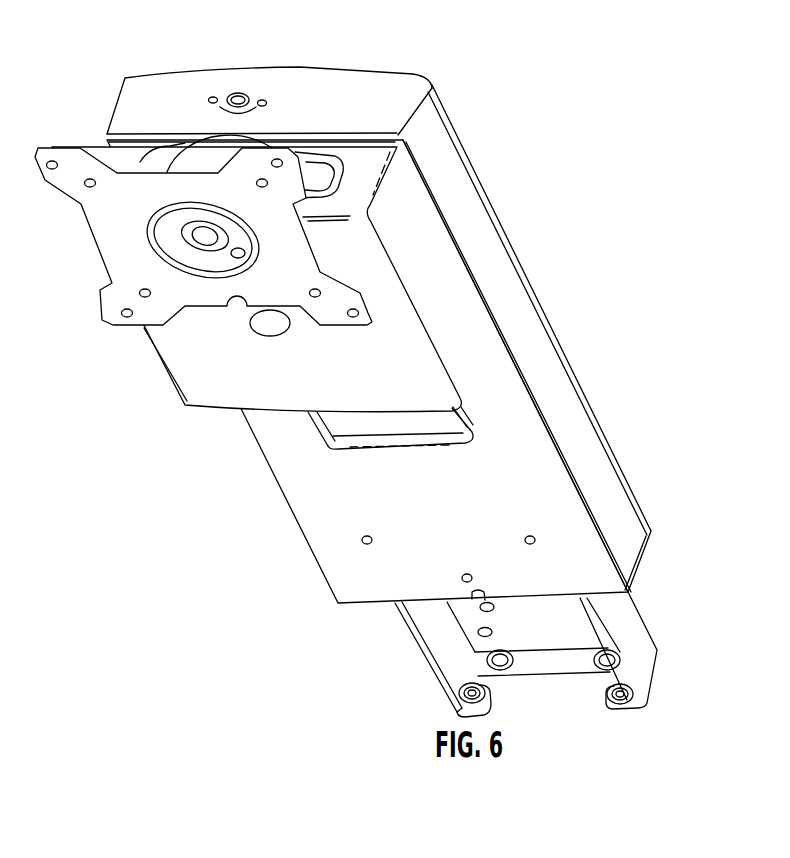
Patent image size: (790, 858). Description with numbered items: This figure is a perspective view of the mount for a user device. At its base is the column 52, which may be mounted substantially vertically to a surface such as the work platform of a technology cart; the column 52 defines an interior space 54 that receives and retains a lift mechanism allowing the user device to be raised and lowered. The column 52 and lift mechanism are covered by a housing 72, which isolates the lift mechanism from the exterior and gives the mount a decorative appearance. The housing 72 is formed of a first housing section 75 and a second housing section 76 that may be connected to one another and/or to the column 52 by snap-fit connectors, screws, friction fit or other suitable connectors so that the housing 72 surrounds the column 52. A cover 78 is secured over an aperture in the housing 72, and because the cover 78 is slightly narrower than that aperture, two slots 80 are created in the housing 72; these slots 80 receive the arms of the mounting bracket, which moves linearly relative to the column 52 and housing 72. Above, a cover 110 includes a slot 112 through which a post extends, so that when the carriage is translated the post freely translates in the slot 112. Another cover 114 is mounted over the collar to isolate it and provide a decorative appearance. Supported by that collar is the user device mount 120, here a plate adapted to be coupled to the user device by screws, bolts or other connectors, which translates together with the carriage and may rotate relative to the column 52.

The column 52 is at (642, 615).
The interior space 54 is at (538, 639).
The housing 72 is at (584, 376).
The first housing section 75 is at (192, 80).
The second housing section 76 is at (600, 477).
The cover 78 is at (380, 423).
The slots 80 is at (331, 427).
The cover 110 is at (186, 405).
The slot 112 is at (339, 171).
The cover 114 is at (191, 158).
The user device mount 120 is at (110, 318).